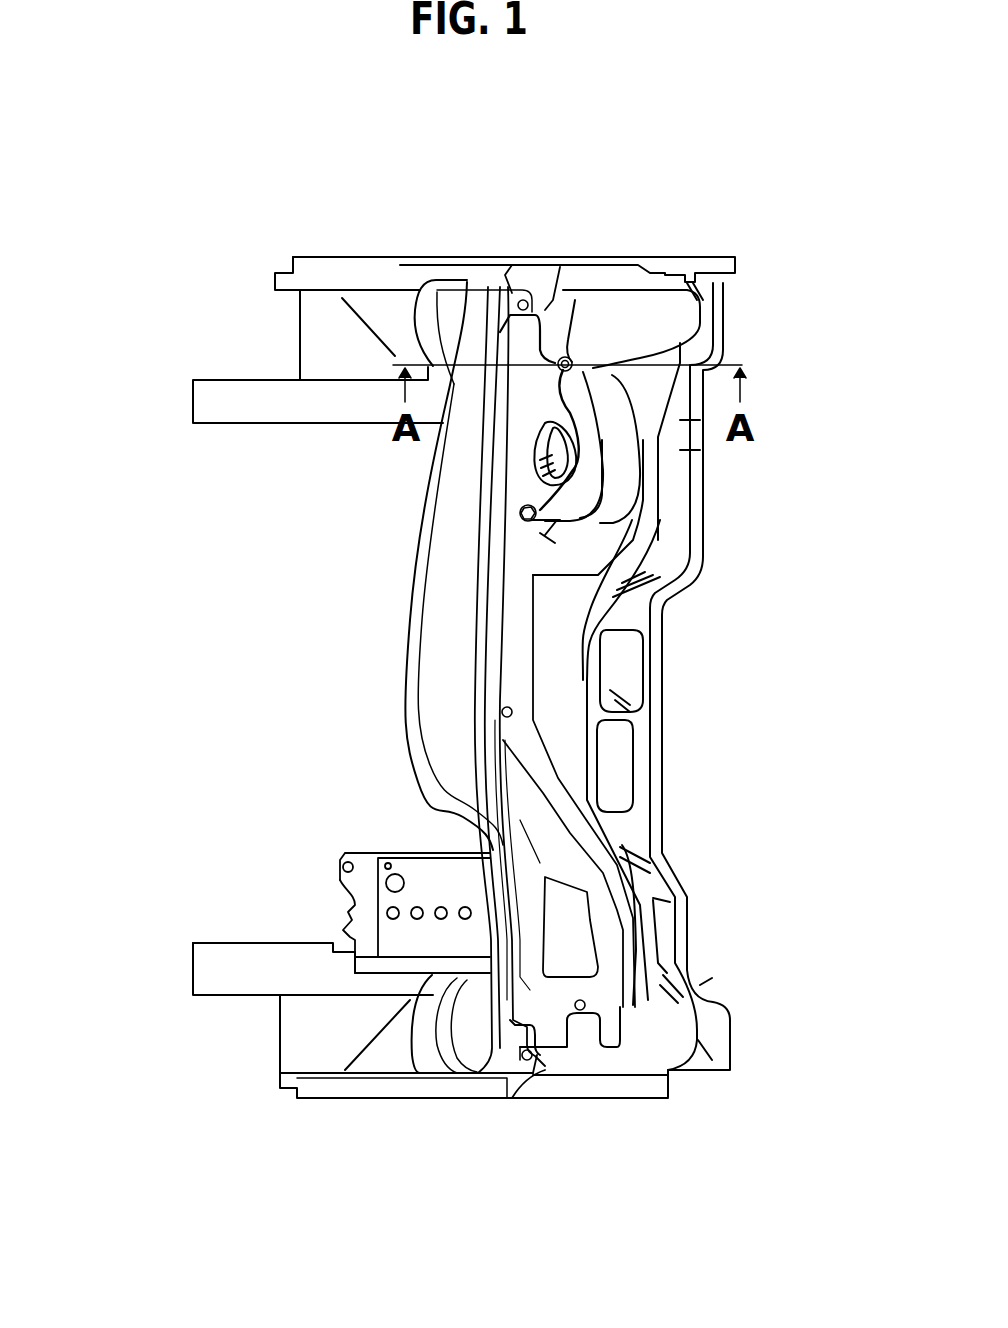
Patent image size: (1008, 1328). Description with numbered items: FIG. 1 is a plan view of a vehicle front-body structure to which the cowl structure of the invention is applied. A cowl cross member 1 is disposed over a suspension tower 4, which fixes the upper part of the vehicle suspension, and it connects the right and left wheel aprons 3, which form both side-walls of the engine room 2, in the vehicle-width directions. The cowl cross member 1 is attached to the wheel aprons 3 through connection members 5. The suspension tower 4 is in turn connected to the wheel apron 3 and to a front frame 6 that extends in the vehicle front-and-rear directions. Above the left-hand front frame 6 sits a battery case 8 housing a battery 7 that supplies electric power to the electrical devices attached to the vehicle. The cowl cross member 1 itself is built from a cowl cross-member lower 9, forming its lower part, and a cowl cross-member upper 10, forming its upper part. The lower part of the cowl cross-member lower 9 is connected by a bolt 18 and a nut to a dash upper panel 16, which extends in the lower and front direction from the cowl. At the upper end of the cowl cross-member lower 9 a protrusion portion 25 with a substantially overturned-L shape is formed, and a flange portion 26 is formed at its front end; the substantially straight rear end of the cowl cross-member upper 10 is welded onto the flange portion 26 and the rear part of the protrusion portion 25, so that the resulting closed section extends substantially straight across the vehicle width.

The cowl cross member 1 is at (385, 505).
The engine room 2 is at (252, 707).
The wheel apron 3 is at (328, 272).
The suspension tower 4 is at (427, 293).
The connection member 5 is at (515, 266).
The front frame 6 is at (252, 405).
The battery 7 is at (387, 898).
The battery case 8 is at (348, 925).
The cowl cross-member lower 9 is at (513, 827).
The cowl cross-member upper 10 is at (450, 548).
The dash upper panel 16 is at (547, 636).
The bolt 18 is at (590, 366).
The protrusion portion 25 is at (487, 653).
The flange portion 26 is at (475, 608).